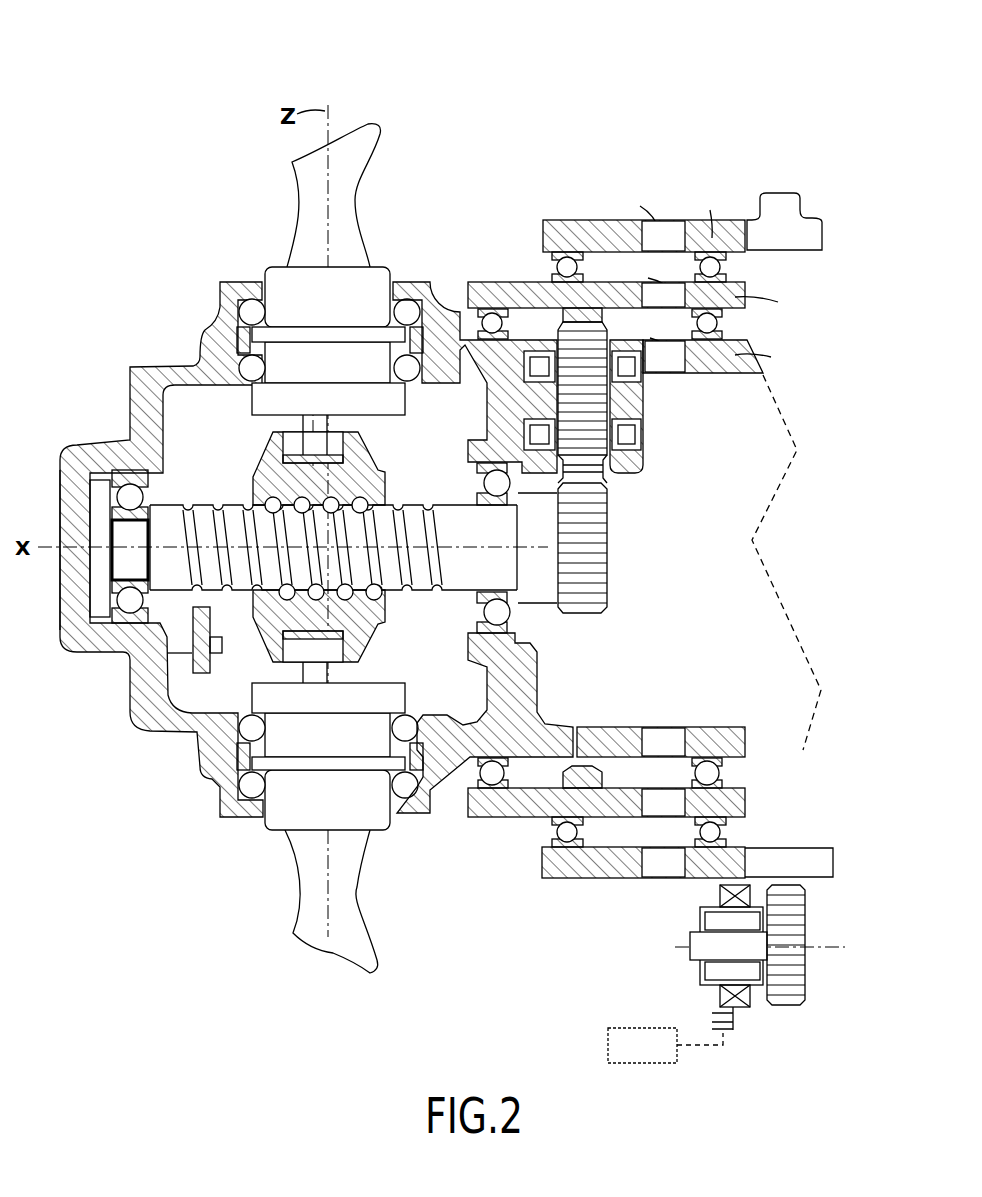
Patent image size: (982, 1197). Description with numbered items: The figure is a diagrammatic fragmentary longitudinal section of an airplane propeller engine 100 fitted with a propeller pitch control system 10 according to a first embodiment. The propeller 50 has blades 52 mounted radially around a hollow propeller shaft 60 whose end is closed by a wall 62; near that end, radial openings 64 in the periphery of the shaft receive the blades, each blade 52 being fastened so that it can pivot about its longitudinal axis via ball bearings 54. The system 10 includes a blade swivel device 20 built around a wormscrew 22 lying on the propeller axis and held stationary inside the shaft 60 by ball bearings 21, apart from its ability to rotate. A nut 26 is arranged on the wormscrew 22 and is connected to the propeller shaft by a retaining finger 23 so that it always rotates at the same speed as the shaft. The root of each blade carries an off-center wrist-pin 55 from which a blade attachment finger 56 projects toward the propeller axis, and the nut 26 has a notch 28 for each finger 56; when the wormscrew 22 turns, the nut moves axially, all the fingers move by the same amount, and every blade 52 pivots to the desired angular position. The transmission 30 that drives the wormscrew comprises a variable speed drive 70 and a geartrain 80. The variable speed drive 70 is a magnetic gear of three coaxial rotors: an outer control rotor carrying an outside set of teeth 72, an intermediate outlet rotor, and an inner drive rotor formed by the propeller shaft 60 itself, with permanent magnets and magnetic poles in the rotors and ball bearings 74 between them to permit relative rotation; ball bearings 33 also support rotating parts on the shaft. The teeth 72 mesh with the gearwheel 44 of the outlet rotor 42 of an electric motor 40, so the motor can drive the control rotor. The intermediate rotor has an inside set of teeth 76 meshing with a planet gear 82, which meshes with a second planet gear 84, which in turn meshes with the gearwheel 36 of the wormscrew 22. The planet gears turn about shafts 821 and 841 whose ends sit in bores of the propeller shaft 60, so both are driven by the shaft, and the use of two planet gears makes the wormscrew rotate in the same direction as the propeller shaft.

The airplane propeller engine 100 is at (209, 70).
The propeller pitch control system 10 is at (172, 197).
The blade swivel device 20 is at (112, 340).
The ball bearings 21 is at (104, 602).
The wormscrew 22 is at (212, 480).
The retaining finger 23 is at (182, 660).
The nut 26 is at (380, 640).
The notch 28 is at (345, 448).
The transmission 30 is at (785, 565).
The ball bearings 33 is at (715, 772).
The gearwheel 36 is at (600, 615).
The electric motor 40 is at (753, 1028).
The outlet rotor 42 is at (684, 930).
The gearwheel 44 is at (802, 977).
The propeller 50 is at (455, 143).
The blade 52 is at (350, 192).
The ball bearings 54 is at (229, 378).
The wrist-pin 55 is at (398, 400).
The blade attachment finger 56 is at (297, 422).
The propeller shaft 60 is at (440, 298).
The wall 62 is at (56, 478).
The radial openings 64 is at (270, 282).
The variable speed drive 70 is at (683, 198).
The outside set of teeth 72 is at (783, 212).
The ball bearings 74 is at (563, 268).
The inside set of teeth 76 is at (584, 772).
The geartrain 80 is at (672, 480).
The planet gear 82 is at (585, 348).
The planet gear 84 is at (592, 455).
The shaft 821 is at (630, 380).
The shaft 841 is at (622, 425).